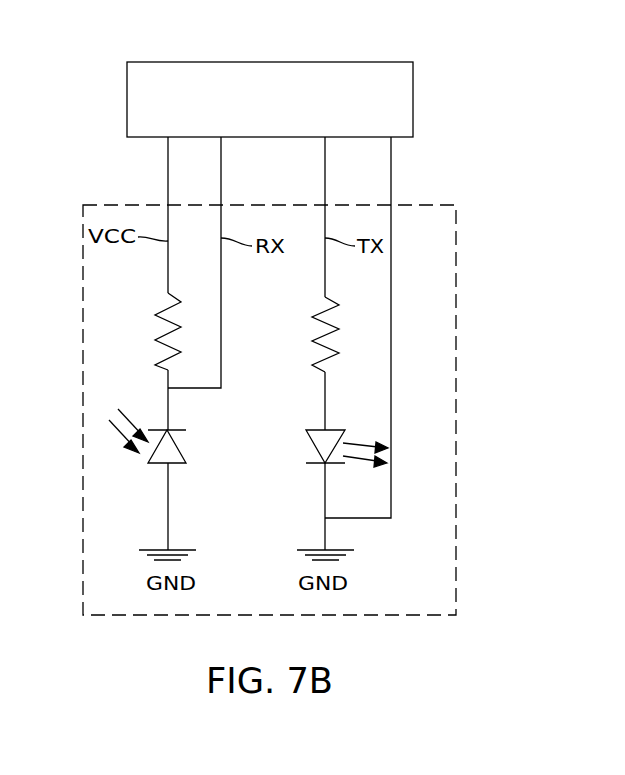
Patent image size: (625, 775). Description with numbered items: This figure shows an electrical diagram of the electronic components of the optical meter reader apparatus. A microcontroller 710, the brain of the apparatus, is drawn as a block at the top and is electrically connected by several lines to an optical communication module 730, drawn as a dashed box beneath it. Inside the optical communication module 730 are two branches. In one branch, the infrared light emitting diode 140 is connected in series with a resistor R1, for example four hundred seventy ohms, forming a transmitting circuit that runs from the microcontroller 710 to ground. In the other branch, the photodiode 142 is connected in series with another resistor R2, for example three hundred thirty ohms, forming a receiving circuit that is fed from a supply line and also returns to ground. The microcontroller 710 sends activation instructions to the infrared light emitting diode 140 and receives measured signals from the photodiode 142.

The microcontroller 710 is at (268, 62).
The optical communication module 730 is at (458, 258).
The photodiode 142 is at (148, 463).
The infrared light emitting diode 140 is at (346, 428).
The resistor R1 is at (339, 328).
The resistor R2 is at (155, 314).